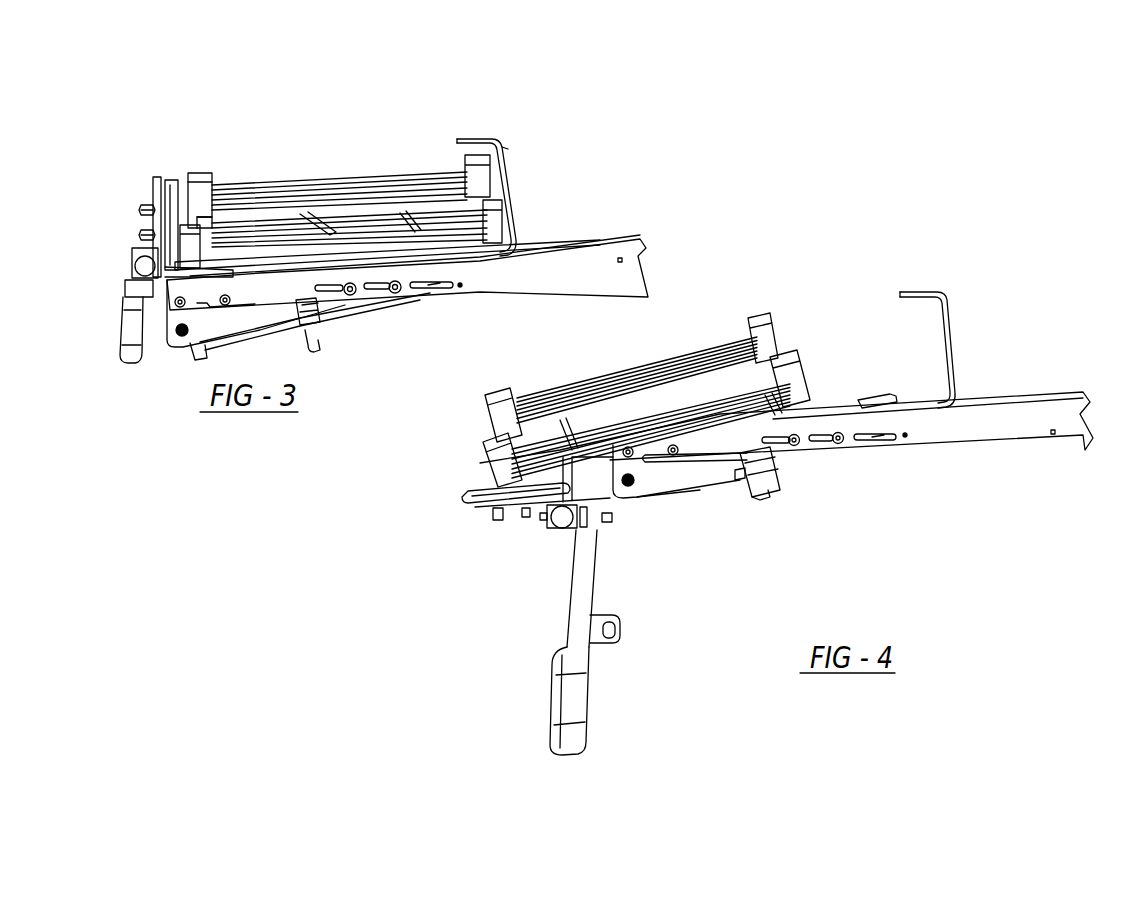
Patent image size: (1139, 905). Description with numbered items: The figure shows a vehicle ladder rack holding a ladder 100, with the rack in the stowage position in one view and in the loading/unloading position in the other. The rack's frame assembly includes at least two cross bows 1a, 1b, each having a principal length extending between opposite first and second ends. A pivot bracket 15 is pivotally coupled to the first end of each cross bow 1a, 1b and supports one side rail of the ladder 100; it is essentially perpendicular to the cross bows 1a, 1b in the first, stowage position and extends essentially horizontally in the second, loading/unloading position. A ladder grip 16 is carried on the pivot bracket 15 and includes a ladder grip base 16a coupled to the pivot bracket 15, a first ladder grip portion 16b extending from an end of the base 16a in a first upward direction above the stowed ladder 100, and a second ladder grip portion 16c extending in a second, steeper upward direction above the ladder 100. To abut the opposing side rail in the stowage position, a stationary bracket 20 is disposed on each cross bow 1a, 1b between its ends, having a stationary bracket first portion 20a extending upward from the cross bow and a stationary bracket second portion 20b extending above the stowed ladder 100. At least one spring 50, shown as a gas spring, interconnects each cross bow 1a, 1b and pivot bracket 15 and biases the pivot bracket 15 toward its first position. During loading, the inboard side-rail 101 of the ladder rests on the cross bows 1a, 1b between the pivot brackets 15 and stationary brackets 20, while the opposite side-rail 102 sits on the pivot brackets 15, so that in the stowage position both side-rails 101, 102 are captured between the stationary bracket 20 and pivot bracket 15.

In FIG. 4, the cross bow 1a is at (985, 437).
In FIG. 3, the cross bow 1b is at (590, 245).
In FIG. 3, the pivot bracket 15 is at (138, 243).
In FIG. 4, the pivot bracket 15 is at (612, 497).
In FIG. 3, the ladder grip 16 is at (140, 215).
In FIG. 3, the ladder grip base 16a is at (152, 195).
In FIG. 3, the first ladder grip portion 16b is at (195, 170).
In FIG. 4, the first ladder grip portion 16b is at (448, 452).
In FIG. 3, the second ladder grip portion 16c is at (203, 165).
In FIG. 4, the second ladder grip portion 16c is at (463, 502).
In FIG. 3, the stationary bracket 20 is at (503, 183).
In FIG. 4, the stationary bracket 20 is at (953, 340).
In FIG. 3, the stationary bracket first portion 20a is at (515, 220).
In FIG. 3, the stationary bracket second portion 20b is at (490, 140).
In FIG. 3, the spring 50 is at (347, 325).
In FIG. 4, the spring 50 is at (797, 450).
In FIG. 3, the ladder 100 is at (350, 173).
In FIG. 4, the ladder 100 is at (680, 357).
In FIG. 4, the inboard side-rail 101 is at (807, 373).
In FIG. 4, the opposite side-rail 102 is at (483, 442).